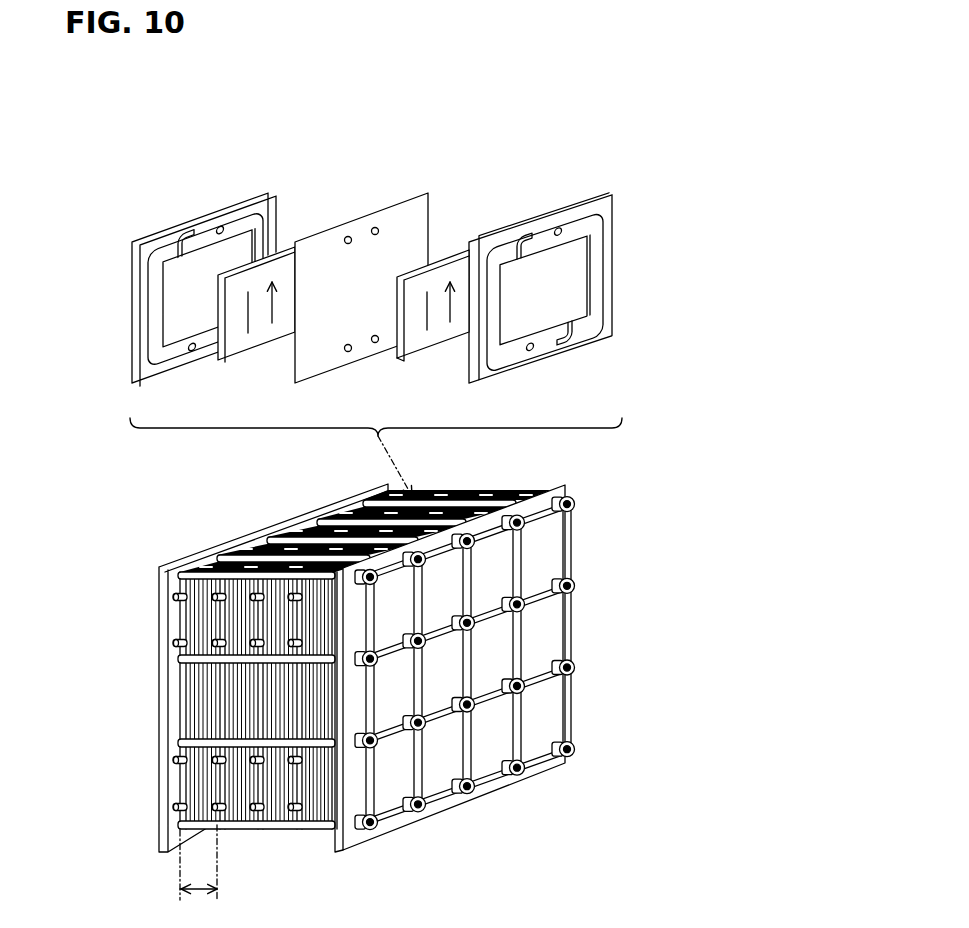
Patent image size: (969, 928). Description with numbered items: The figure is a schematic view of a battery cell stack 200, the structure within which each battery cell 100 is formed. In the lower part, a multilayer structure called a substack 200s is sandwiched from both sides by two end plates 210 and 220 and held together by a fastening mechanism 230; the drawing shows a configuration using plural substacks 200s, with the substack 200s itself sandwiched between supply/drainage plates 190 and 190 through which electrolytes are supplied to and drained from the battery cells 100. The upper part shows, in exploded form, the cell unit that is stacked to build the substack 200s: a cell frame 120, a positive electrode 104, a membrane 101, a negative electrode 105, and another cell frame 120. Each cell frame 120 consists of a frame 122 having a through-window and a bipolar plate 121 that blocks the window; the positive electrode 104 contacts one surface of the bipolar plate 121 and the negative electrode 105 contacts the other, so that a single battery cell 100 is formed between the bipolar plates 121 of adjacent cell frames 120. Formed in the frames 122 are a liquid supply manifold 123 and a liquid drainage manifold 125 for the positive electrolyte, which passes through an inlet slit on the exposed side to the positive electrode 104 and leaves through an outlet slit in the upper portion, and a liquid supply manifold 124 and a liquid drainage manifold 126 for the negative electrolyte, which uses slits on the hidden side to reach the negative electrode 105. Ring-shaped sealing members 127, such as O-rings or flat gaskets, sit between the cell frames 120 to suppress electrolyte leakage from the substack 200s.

The battery cell 100 is at (193, 141).
The membrane 101 is at (387, 198).
The positive electrode 104 is at (268, 342).
The negative electrode 105 is at (420, 347).
The cell frame 120 is at (688, 231).
The bipolar plate 121 is at (575, 248).
The frame 122 is at (597, 296).
The liquid supply manifold 123 is at (573, 337).
The liquid supply manifold 124 is at (192, 350).
The liquid drainage manifold 125 is at (183, 240).
The liquid drainage manifold 126 is at (222, 226).
The ring-shaped sealing member 127 is at (268, 220).
The supply/drainage plate 190 is at (182, 788).
The battery cell stack 200 is at (580, 632).
The substack 200s is at (198, 876).
The end plate 210 is at (497, 717).
The end plate 220 is at (159, 586).
The fastening mechanism 230 is at (290, 540).